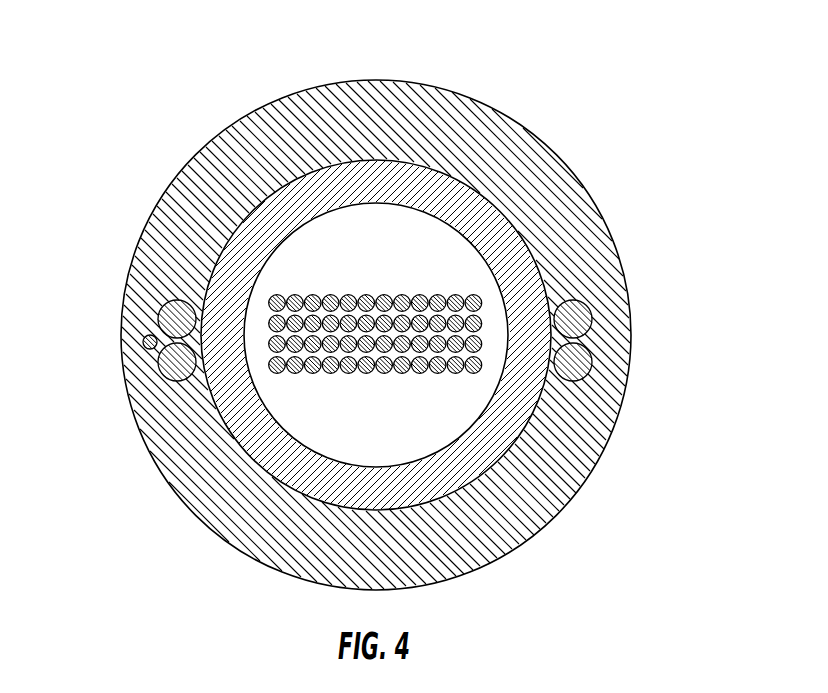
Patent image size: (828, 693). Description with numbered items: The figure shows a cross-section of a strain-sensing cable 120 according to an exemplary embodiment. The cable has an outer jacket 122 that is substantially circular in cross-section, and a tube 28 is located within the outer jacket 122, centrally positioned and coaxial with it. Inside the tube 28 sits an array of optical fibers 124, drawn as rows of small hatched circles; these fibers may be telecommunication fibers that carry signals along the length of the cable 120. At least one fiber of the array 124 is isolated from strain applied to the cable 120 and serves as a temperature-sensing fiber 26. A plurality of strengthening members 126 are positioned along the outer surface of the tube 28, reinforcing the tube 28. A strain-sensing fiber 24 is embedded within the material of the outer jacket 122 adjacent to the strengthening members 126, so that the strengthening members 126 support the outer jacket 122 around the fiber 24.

The strain-sensing cable 120 is at (615, 452).
The outer jacket 122 is at (490, 138).
The tube 28 is at (523, 273).
The temperature-sensing fiber 26 is at (270, 366).
The strengthening members 126 is at (175, 318).
The strain-sensing fiber 24 is at (152, 343).
The array of optical fibers 124 is at (350, 395).